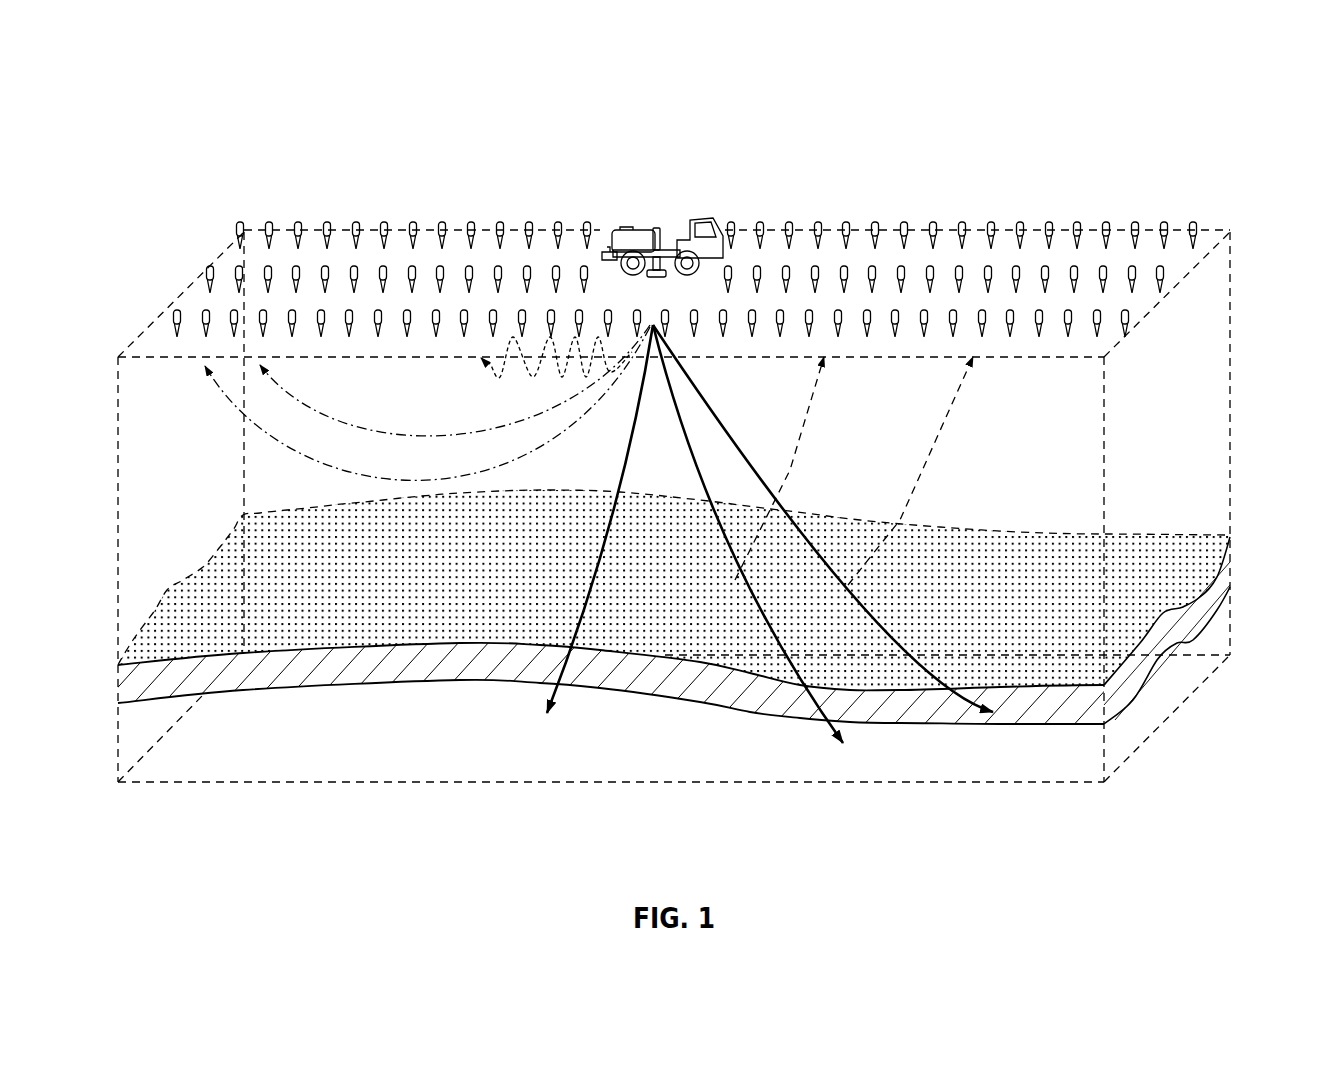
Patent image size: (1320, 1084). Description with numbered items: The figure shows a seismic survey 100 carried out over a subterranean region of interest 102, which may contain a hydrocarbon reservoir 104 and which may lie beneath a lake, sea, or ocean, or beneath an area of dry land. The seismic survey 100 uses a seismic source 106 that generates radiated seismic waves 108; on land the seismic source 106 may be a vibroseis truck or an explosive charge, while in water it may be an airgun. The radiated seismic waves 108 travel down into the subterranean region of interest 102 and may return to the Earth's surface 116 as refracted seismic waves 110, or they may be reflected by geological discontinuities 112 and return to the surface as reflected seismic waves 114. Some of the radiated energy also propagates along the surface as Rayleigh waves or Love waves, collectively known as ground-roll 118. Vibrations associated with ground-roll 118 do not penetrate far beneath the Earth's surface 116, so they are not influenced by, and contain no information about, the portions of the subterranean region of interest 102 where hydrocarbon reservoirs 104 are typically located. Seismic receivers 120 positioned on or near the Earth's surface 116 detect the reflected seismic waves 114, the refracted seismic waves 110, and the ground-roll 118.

The seismic survey 100 is at (1214, 98).
The subterranean region of interest 102 is at (1022, 757).
The hydrocarbon reservoir 104 is at (230, 680).
The seismic source 106 is at (634, 228).
The radiated seismic waves 108 is at (585, 600).
The refracted seismic waves 110 is at (310, 400).
The geological discontinuities 112 is at (1115, 677).
The reflected seismic waves 114 is at (817, 388).
The Earth's surface 116 is at (186, 289).
The ground-roll 118 is at (493, 365).
The seismic receivers 120 is at (1106, 220).